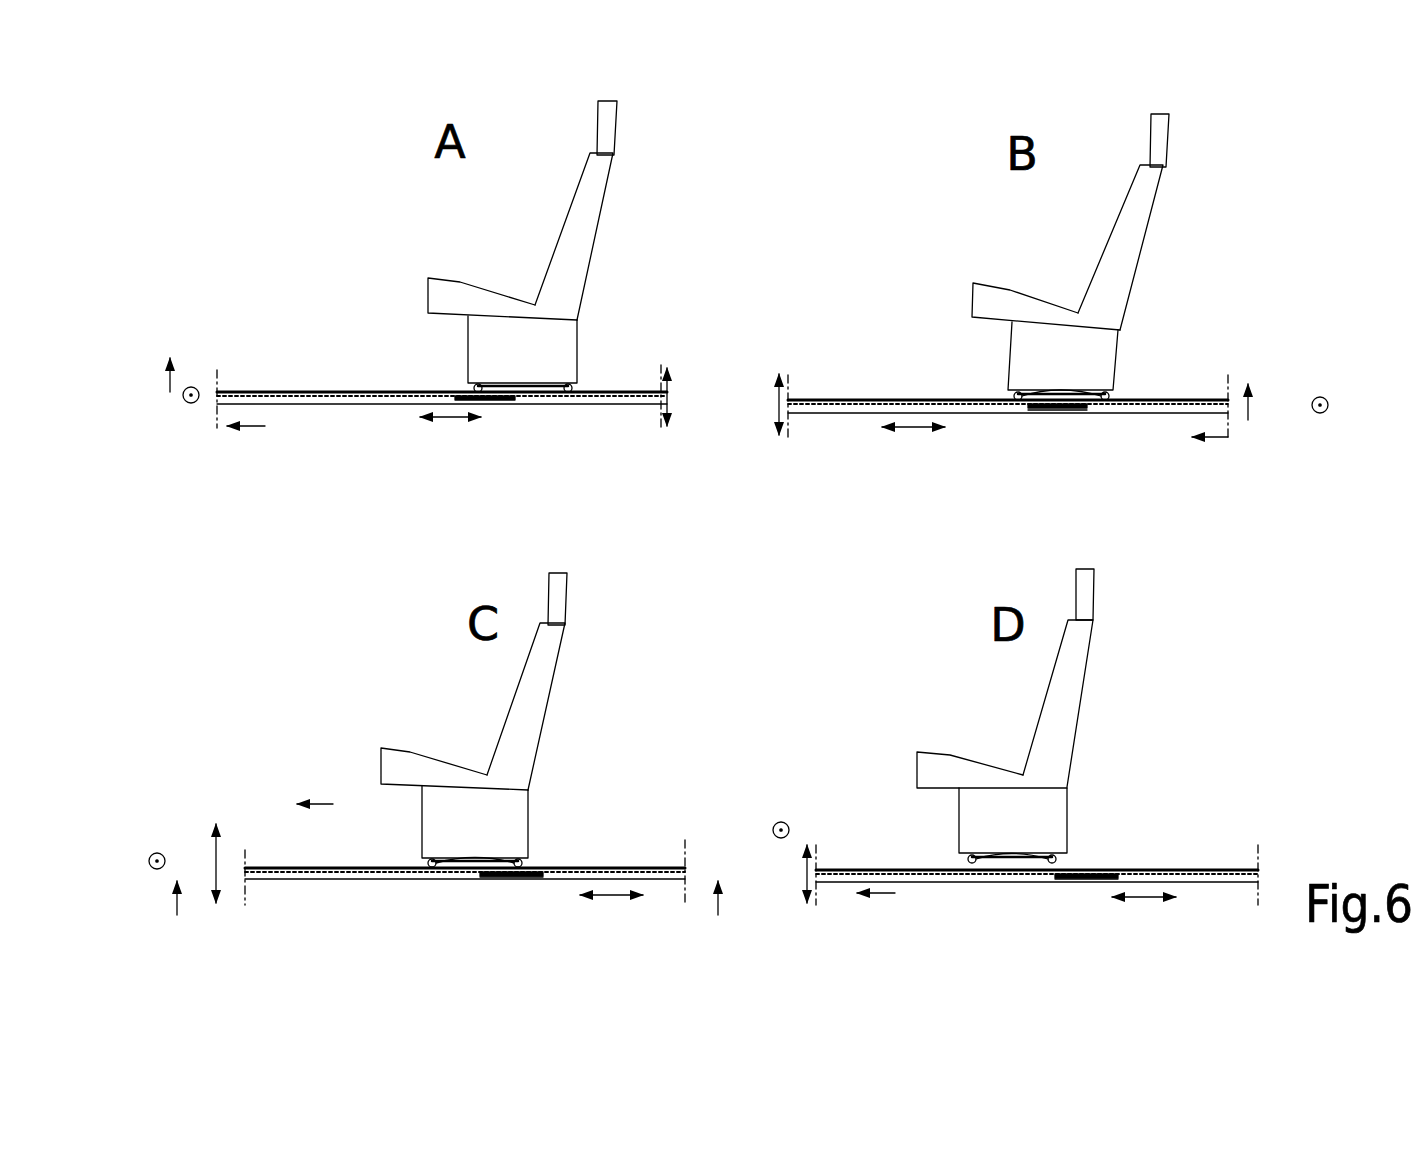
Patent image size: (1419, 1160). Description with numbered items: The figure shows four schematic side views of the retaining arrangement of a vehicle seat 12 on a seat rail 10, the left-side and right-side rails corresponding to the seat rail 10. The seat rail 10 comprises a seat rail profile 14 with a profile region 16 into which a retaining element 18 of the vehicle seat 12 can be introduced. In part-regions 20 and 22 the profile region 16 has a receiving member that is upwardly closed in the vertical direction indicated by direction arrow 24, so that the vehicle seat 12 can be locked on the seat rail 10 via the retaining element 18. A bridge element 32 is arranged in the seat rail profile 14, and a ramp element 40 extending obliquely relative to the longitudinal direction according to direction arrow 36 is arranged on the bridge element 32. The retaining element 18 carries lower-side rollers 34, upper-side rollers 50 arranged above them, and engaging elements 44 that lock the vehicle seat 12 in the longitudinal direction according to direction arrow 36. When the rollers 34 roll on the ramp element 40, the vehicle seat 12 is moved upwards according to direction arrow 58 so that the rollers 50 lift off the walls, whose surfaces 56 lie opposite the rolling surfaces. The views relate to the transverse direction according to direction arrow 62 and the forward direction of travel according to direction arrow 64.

The seat rail 10 is at (338, 421).
The vehicle seat 12 is at (781, 479).
The seat rail profile 14 is at (278, 390).
The profile region 16 is at (378, 345).
The retaining element 18 is at (566, 384).
The part-region 20 is at (330, 330).
The part-region 22 is at (637, 361).
The direction arrow 24 is at (670, 404).
The bridge element 32 is at (495, 402).
The rollers 34 is at (1035, 414).
The direction arrow 36 is at (450, 419).
The ramp element 40 is at (511, 386).
The engaging elements 44 is at (1010, 393).
The rollers 50 is at (481, 385).
The surfaces 56 is at (175, 909).
The direction arrow 58 is at (168, 387).
The direction arrow 62 is at (192, 387).
The direction arrow 64 is at (248, 428).